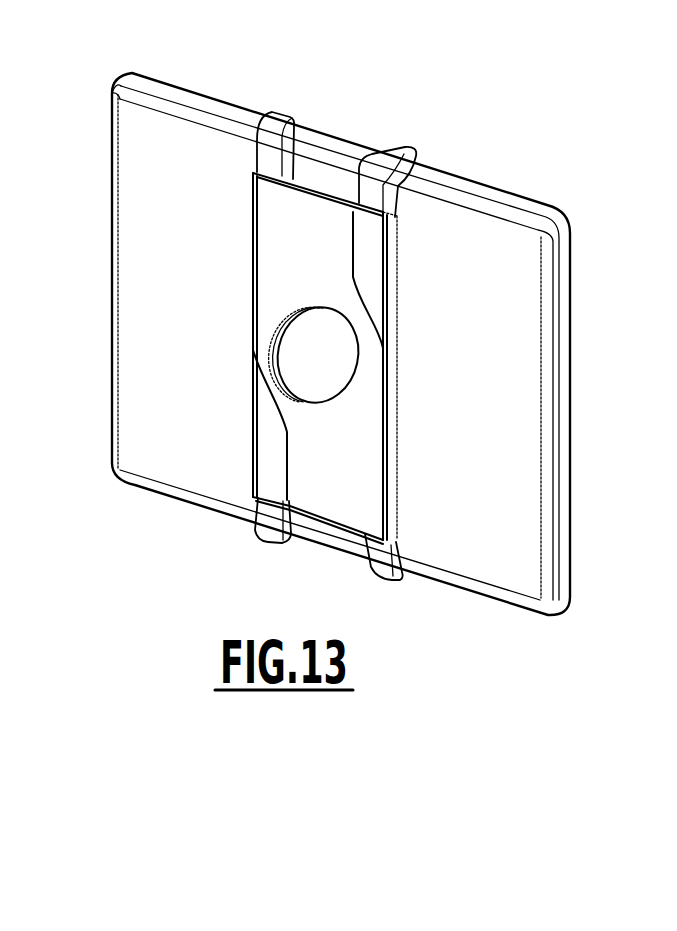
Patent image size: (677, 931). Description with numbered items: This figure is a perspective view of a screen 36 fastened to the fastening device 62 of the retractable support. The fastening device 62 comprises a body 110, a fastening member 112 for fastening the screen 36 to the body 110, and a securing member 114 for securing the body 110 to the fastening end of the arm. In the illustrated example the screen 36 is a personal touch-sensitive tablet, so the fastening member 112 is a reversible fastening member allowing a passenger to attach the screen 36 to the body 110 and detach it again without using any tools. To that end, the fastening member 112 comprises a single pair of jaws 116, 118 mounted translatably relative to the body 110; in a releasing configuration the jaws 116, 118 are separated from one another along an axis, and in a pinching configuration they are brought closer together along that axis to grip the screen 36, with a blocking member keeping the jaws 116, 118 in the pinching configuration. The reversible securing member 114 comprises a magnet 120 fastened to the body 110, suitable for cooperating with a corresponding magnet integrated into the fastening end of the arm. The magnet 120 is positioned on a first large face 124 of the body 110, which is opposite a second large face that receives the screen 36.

The screen 36 is at (556, 311).
The fastening device 62 is at (407, 398).
The body 110 is at (285, 263).
The fastening member 112 is at (404, 192).
The securing member 114 is at (313, 360).
The jaw 116 is at (289, 115).
The jaw 118 is at (264, 546).
The magnet 120 is at (352, 343).
The first large face 124 is at (363, 473).